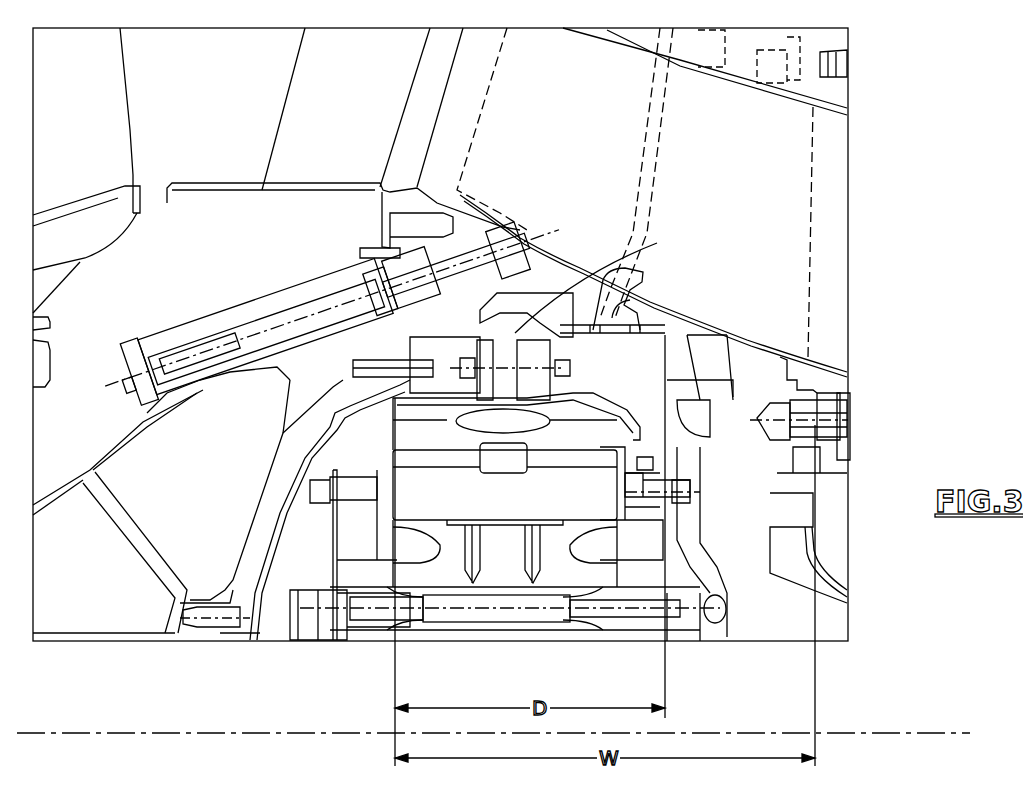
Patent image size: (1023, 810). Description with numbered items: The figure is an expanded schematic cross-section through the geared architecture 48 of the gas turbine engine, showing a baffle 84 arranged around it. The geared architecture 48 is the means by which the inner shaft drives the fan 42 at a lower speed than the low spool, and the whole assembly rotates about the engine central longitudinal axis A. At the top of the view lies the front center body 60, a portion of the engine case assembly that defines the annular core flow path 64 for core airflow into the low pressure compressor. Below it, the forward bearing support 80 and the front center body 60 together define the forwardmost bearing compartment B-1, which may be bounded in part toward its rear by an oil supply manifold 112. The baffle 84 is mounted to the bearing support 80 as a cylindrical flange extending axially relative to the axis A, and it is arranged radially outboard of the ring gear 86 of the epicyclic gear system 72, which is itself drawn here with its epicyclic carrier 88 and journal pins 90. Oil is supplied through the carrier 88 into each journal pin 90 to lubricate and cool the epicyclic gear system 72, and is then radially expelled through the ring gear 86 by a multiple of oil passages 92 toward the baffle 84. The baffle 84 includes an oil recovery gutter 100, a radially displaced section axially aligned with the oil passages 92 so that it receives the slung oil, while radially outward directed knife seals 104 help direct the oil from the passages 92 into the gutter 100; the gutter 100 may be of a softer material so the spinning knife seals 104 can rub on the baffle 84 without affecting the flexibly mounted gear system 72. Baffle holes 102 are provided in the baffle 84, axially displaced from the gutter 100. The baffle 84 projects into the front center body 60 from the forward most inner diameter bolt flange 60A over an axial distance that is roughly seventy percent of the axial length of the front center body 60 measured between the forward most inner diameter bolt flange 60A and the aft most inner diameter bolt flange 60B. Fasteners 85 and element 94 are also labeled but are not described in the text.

The fan 42 is at (248, 207).
The annular core flow path 64 is at (635, 192).
The front center body 60 is at (742, 72).
The forward most inner diameter bolt flange 60A is at (398, 655).
The aft most inner diameter bolt flange 60B is at (818, 655).
The geared architecture 48 is at (866, 434).
The #1/1.5 bearing support 80 is at (88, 467).
The actuator fasteners 85 is at (376, 362).
The baffle 84 is at (668, 336).
The oil recovery gutter 100 is at (605, 282).
The baffle holes 102 is at (643, 272).
The knife seals 104 is at (483, 327).
The oil passages 92 is at (560, 395).
The ring gear 86 is at (505, 441).
The rotor disk 94 is at (505, 487).
The epicyclic carrier 88 is at (690, 490).
The journal pin 90 is at (505, 553).
The oil supply manifold 112 is at (690, 545).
The epicyclic gear system 72 is at (532, 636).
The forwardmost bearing compartment B-1 is at (257, 583).
The engine central longitudinal axis A is at (885, 733).